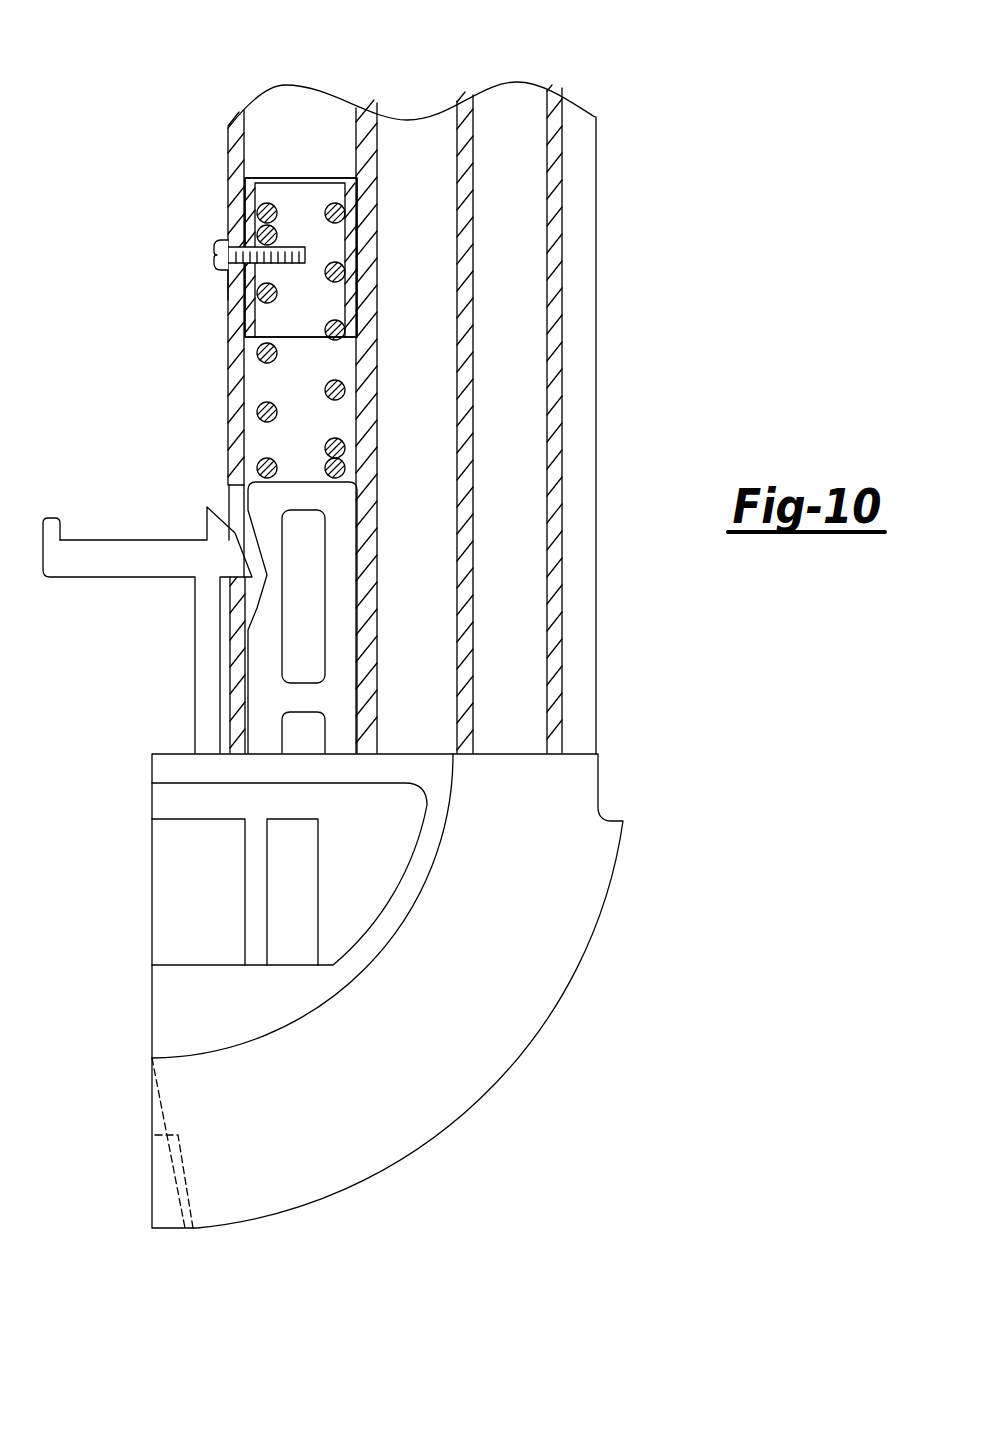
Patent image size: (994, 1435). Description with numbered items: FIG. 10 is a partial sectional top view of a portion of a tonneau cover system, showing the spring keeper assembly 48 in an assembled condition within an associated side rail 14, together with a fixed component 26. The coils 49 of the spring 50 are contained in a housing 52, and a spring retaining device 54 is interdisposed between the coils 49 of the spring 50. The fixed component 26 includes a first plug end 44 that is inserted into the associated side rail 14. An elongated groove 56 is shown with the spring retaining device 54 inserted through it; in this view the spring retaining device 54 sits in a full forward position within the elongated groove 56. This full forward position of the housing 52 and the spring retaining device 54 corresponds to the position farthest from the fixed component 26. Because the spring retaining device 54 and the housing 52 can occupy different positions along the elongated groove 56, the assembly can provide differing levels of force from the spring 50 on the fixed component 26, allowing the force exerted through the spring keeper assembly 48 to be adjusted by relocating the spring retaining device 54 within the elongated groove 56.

The side rail 14 is at (505, 138).
The fixed component 26 is at (515, 1062).
The first plug end 44 is at (270, 688).
The spring keeper assembly 48 is at (122, 167).
The coils 49 is at (257, 416).
The spring 50 is at (345, 392).
The housing 52 is at (247, 205).
The spring retaining device 54 is at (213, 253).
The elongated groove 56 is at (237, 272).